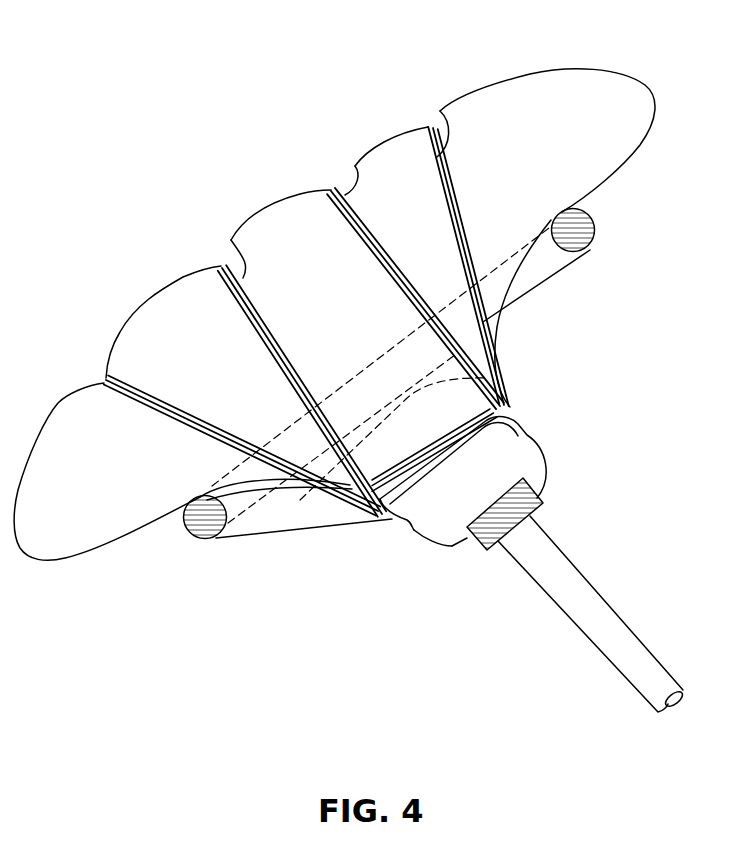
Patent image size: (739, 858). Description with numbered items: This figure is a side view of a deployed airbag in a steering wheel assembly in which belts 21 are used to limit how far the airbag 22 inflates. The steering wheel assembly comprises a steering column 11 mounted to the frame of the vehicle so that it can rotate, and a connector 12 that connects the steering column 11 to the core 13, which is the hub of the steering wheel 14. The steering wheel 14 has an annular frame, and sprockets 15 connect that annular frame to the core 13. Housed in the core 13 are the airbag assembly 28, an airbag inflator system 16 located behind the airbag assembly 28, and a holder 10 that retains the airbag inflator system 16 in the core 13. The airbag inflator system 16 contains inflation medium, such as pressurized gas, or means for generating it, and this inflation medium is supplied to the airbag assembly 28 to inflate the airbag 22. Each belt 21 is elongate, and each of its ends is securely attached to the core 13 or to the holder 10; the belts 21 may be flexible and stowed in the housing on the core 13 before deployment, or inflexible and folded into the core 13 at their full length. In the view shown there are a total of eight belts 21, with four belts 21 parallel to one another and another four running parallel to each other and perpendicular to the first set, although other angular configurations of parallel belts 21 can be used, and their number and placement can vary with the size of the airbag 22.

The holder 10 is at (463, 460).
The steering column 11 is at (583, 600).
The connector 12 is at (517, 503).
The core 13 is at (440, 547).
The steering wheel 14 is at (358, 390).
The sprockets 15 is at (273, 512).
The airbag inflator system 16 is at (510, 403).
The belts 21 is at (123, 383).
The airbag 22 is at (170, 287).
The airbag assembly 28 is at (453, 395).